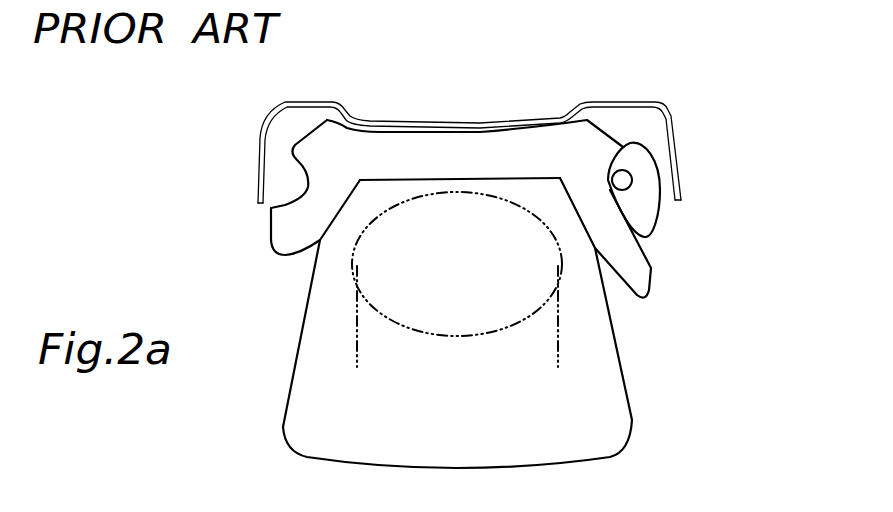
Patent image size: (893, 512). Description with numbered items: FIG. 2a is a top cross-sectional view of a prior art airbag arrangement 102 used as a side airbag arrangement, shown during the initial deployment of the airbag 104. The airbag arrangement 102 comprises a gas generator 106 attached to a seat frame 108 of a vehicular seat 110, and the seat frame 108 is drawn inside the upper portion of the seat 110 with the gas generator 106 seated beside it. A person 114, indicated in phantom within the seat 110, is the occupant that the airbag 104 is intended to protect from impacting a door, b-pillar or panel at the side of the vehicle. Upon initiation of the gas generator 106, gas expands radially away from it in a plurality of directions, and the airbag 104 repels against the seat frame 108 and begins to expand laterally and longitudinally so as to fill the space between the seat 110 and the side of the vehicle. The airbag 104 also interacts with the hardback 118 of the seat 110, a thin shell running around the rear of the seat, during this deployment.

The airbag arrangement 102 is at (716, 133).
The airbag 104 is at (640, 213).
The gas generator 106 is at (624, 178).
The seat frame 108 is at (480, 169).
The vehicular seat 110 is at (212, 204).
The person 114 is at (475, 281).
The hardback 118 is at (675, 153).